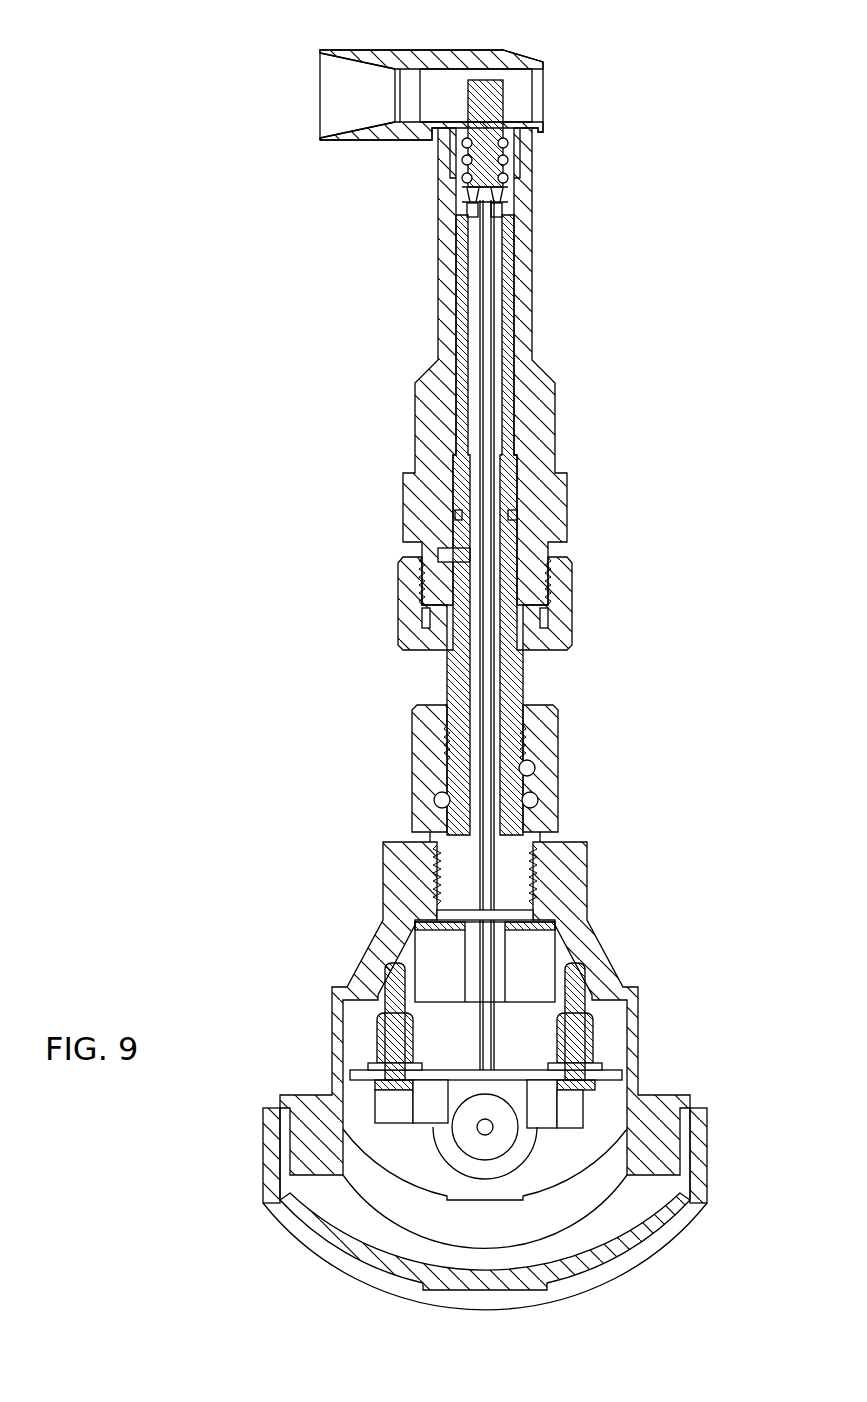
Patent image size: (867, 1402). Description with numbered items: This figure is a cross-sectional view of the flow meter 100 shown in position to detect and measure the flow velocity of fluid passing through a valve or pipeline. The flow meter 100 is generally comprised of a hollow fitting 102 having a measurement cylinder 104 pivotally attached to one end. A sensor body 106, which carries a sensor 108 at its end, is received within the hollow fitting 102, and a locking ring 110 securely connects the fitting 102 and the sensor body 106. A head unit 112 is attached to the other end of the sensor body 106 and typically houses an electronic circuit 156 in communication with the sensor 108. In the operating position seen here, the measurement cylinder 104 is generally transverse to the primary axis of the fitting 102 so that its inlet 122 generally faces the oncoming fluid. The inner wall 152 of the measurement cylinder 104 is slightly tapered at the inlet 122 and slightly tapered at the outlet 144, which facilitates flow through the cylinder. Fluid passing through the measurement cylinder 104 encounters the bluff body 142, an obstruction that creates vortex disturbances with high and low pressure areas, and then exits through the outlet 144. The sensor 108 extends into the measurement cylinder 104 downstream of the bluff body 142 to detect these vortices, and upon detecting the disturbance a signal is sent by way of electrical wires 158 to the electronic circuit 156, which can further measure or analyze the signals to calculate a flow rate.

The flow meter 100 is at (690, 326).
The fitting 102 is at (525, 222).
The measurement cylinder 104 is at (430, 53).
The sensor body 106 is at (507, 295).
The sensor 108 is at (493, 83).
The locking ring 110 is at (572, 588).
The head unit 112 is at (393, 930).
The inlet 122 is at (330, 112).
The bluff body 142 is at (410, 112).
The outlet 144 is at (538, 92).
The inner wall 152 is at (337, 62).
The electronic circuit 156 is at (512, 1027).
The electrical wires 158 is at (480, 305).